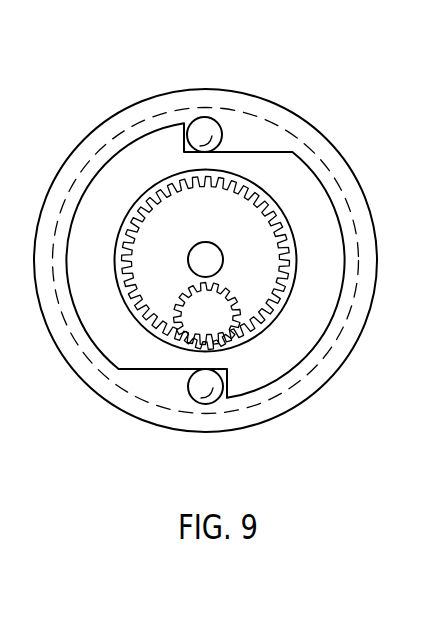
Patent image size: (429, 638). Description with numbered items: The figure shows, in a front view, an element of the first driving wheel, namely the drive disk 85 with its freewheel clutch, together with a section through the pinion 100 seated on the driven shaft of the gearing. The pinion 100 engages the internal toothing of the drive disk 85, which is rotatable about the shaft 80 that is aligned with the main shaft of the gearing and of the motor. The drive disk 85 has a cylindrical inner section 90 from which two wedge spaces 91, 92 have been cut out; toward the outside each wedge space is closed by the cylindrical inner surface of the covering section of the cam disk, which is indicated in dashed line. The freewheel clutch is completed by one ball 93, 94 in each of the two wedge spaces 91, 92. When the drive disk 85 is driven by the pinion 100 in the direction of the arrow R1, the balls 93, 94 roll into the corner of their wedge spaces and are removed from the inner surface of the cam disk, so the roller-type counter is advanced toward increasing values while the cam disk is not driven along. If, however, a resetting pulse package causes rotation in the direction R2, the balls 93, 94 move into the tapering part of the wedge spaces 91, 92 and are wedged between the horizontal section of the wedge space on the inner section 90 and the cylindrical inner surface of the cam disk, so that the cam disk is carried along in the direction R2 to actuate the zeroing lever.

The shaft 80 is at (213, 263).
The drive disk 85 is at (172, 105).
The cylindrical inner section 90 is at (138, 157).
The wedge space 91 is at (168, 376).
The wedge space 92 is at (258, 143).
The ball 93 is at (208, 125).
The ball 94 is at (200, 388).
The pinion 100 is at (222, 332).
The direction of rotation R1 is at (310, 313).
The direction of rotation R2 is at (304, 203).